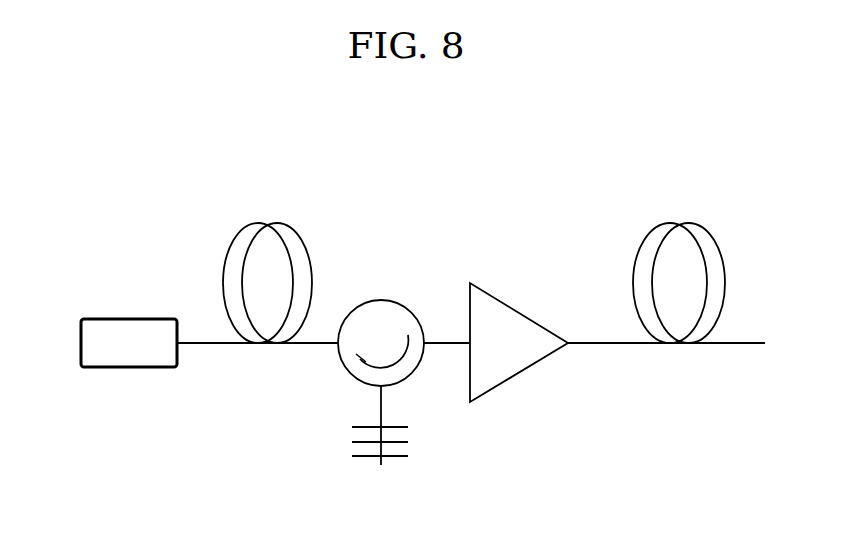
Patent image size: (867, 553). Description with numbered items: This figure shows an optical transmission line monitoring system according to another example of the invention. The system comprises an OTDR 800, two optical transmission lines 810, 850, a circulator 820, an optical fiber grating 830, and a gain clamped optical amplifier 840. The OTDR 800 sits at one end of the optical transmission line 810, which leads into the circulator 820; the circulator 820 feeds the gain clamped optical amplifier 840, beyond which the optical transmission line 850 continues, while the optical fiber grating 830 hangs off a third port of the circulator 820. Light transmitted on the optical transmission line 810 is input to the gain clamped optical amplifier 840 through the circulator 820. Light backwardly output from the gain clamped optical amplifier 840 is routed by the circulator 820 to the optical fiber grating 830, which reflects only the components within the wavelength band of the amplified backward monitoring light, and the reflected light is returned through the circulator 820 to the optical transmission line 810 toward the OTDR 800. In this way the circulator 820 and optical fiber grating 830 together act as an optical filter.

The OTDR 800 is at (141, 319).
The optical transmission line 810 is at (275, 223).
The circulator 820 is at (383, 302).
The optical fiber grating 830 is at (392, 457).
The gain clamped optical amplifier 840 is at (522, 313).
The optical transmission line 850 is at (688, 223).